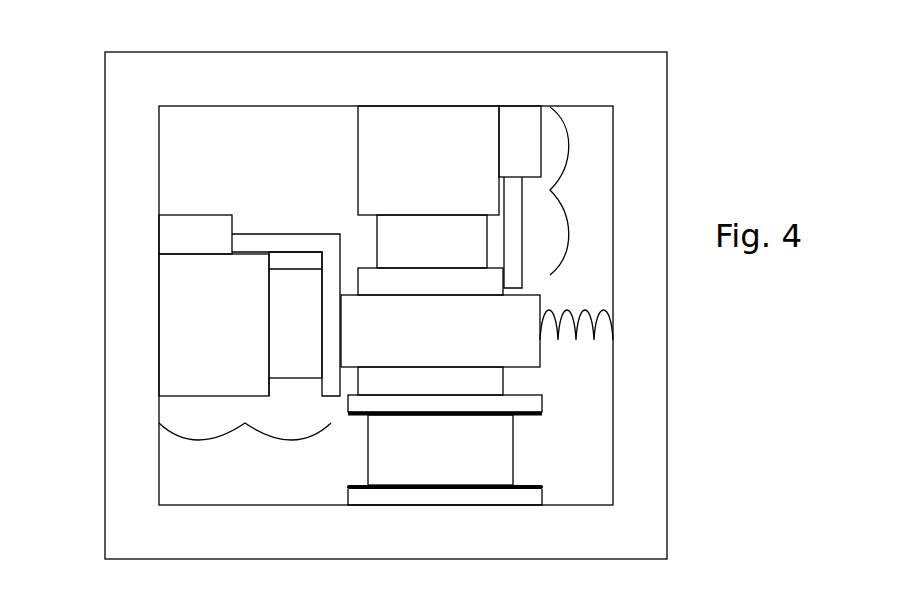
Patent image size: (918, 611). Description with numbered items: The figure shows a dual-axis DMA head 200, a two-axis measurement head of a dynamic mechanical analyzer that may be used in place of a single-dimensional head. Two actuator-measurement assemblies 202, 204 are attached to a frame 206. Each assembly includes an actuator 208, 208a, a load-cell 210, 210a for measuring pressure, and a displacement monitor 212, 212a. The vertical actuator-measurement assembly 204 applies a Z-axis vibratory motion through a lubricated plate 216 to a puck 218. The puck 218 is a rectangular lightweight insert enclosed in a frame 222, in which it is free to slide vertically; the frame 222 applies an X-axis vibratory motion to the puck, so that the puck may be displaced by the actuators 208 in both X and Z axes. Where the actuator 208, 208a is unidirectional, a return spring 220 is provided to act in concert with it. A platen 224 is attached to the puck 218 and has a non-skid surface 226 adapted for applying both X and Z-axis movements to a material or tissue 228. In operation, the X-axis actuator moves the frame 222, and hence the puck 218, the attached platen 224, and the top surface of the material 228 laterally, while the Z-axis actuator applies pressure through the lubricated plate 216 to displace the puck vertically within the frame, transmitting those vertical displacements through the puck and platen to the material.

The dual-axis DMA head 200 is at (736, 47).
The actuator-measurement assembly 202 is at (245, 428).
The vertical actuator-measurement assembly 204 is at (557, 190).
The frame 206 is at (258, 58).
The actuator 208 is at (413, 192).
The actuator 208a is at (187, 318).
The load-cell 210 is at (432, 242).
The load-cell 210a is at (305, 305).
The displacement monitor 212 is at (523, 125).
The displacement monitor 212a is at (195, 235).
The lubricated plate 216 is at (493, 278).
The puck 218 is at (395, 385).
The return spring 220 is at (582, 315).
The frame 222 is at (403, 334).
The platen 224 is at (542, 403).
The non-skid surface 226 is at (545, 413).
The material or tissue 228 is at (460, 462).